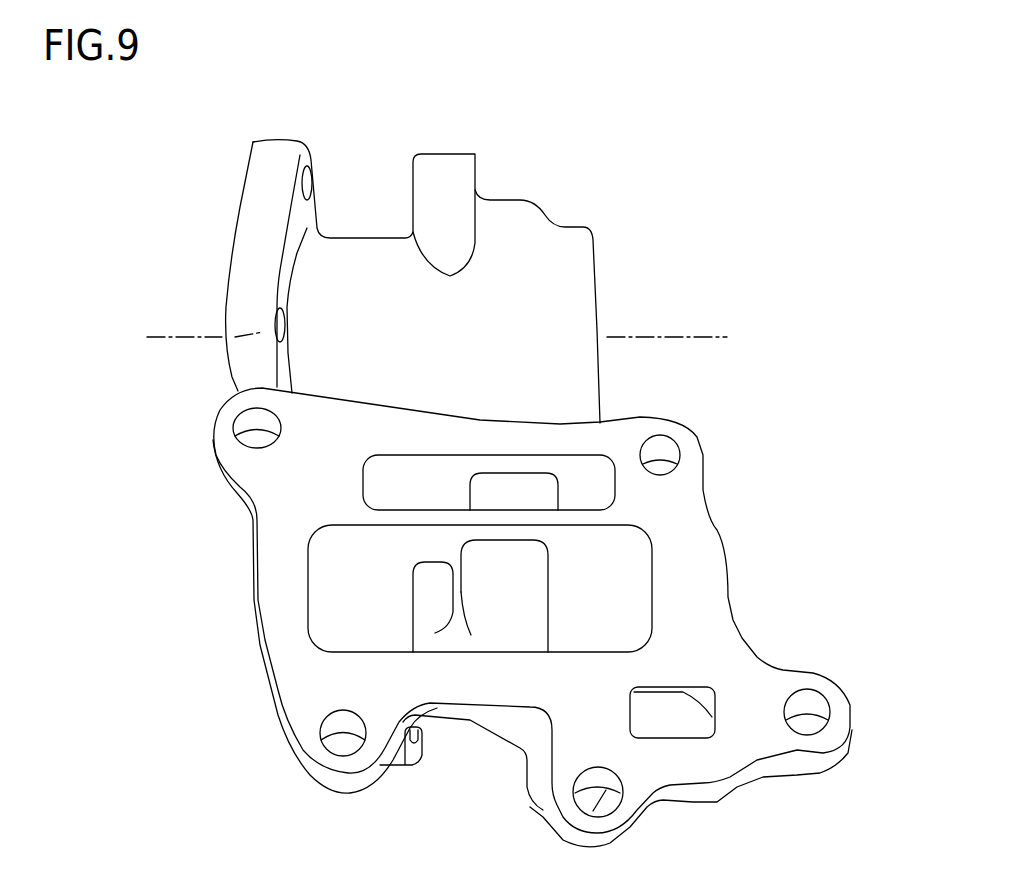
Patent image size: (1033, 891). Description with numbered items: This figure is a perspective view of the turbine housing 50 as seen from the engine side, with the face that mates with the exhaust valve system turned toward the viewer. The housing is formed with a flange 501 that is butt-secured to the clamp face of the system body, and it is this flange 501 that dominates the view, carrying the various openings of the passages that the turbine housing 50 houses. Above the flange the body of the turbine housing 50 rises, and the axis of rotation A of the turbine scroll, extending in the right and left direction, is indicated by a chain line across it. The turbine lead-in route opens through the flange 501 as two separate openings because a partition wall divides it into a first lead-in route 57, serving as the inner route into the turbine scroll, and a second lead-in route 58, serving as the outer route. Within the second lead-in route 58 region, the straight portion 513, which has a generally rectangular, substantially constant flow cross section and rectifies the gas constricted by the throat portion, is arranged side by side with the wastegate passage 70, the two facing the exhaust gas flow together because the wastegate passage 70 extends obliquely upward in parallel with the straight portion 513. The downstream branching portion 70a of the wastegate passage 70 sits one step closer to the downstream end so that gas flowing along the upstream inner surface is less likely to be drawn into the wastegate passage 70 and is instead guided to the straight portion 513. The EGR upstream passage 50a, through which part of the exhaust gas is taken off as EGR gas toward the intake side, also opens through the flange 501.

The turbine housing 50 is at (637, 218).
The flange 501 is at (697, 545).
The EGR upstream passage 50a is at (676, 737).
The first lead-in route 57 is at (393, 487).
The second lead-in route 58 is at (340, 588).
The straight portion 513 is at (535, 493).
The wastegate passage 70 is at (432, 598).
The branching portion 70a is at (461, 592).
The axis of rotation A is at (705, 337).